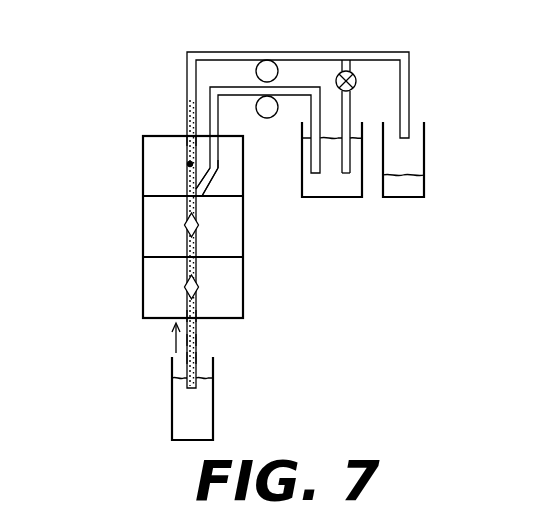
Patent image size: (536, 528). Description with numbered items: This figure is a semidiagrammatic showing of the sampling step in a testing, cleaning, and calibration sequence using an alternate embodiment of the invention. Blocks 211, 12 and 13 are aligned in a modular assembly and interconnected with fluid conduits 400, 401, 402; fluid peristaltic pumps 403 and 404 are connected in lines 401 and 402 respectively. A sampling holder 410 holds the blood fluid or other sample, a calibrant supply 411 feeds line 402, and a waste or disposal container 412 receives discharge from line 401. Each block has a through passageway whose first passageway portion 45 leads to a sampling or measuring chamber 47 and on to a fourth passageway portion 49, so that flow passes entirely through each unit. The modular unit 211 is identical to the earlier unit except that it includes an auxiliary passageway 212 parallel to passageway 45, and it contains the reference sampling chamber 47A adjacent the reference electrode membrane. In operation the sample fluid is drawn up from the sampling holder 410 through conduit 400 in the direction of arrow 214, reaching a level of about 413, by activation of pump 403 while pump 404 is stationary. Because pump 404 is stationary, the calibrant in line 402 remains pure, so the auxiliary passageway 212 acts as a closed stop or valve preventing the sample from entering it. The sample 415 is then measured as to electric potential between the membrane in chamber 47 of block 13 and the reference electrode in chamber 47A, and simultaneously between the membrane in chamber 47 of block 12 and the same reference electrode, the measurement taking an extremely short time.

The fluid conduit 401 is at (251, 52).
The fluid conduit 402 is at (243, 87).
The fluid peristaltic pump 403 is at (279, 62).
The fluid peristaltic pump 404 is at (264, 117).
The sample level 413 is at (187, 100).
The fourth passageway portion 49 is at (186, 141).
The modular unit 211 is at (188, 164).
The auxiliary passageway 212 is at (220, 163).
The reference sampling chamber 47A is at (187, 172).
The block 12 is at (143, 219).
The block 13 is at (143, 284).
The sampling or measuring chamber 47 is at (197, 226).
The first passageway portion 45 is at (197, 312).
The sample 415 is at (197, 340).
The flow direction arrow 214 is at (172, 340).
The fluid conduit 400 is at (187, 358).
The sampling holder 410 is at (213, 394).
The calibrant supply 411 is at (318, 183).
The waste or disposal container 412 is at (410, 188).